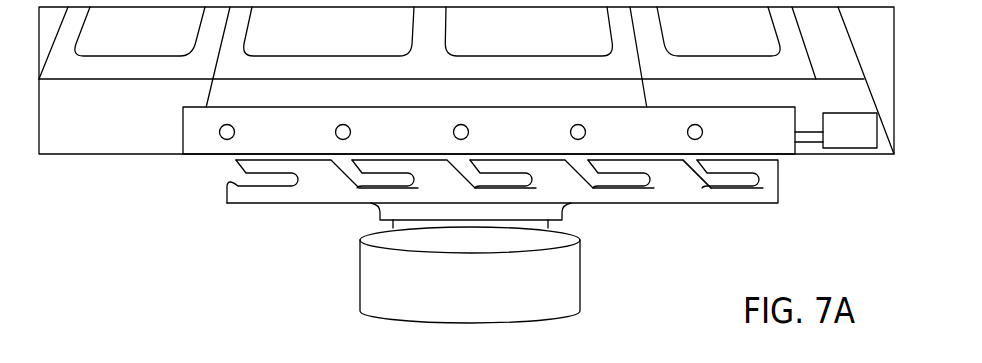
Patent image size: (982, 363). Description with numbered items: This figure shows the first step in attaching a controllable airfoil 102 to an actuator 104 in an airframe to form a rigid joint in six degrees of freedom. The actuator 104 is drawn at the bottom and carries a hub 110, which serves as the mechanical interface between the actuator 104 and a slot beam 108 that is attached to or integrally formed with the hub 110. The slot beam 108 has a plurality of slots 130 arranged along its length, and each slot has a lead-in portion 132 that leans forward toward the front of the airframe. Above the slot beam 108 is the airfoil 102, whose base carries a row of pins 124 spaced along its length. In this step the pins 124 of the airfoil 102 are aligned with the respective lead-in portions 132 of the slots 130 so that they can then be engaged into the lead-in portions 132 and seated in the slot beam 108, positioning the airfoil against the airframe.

The airfoil 102 is at (857, 53).
The pins 124 is at (703, 131).
The slot beam 108 is at (668, 190).
The slots 130 is at (251, 206).
The lead-in portion 132 is at (706, 177).
The hub 110 is at (392, 212).
The actuator 104 is at (583, 277).